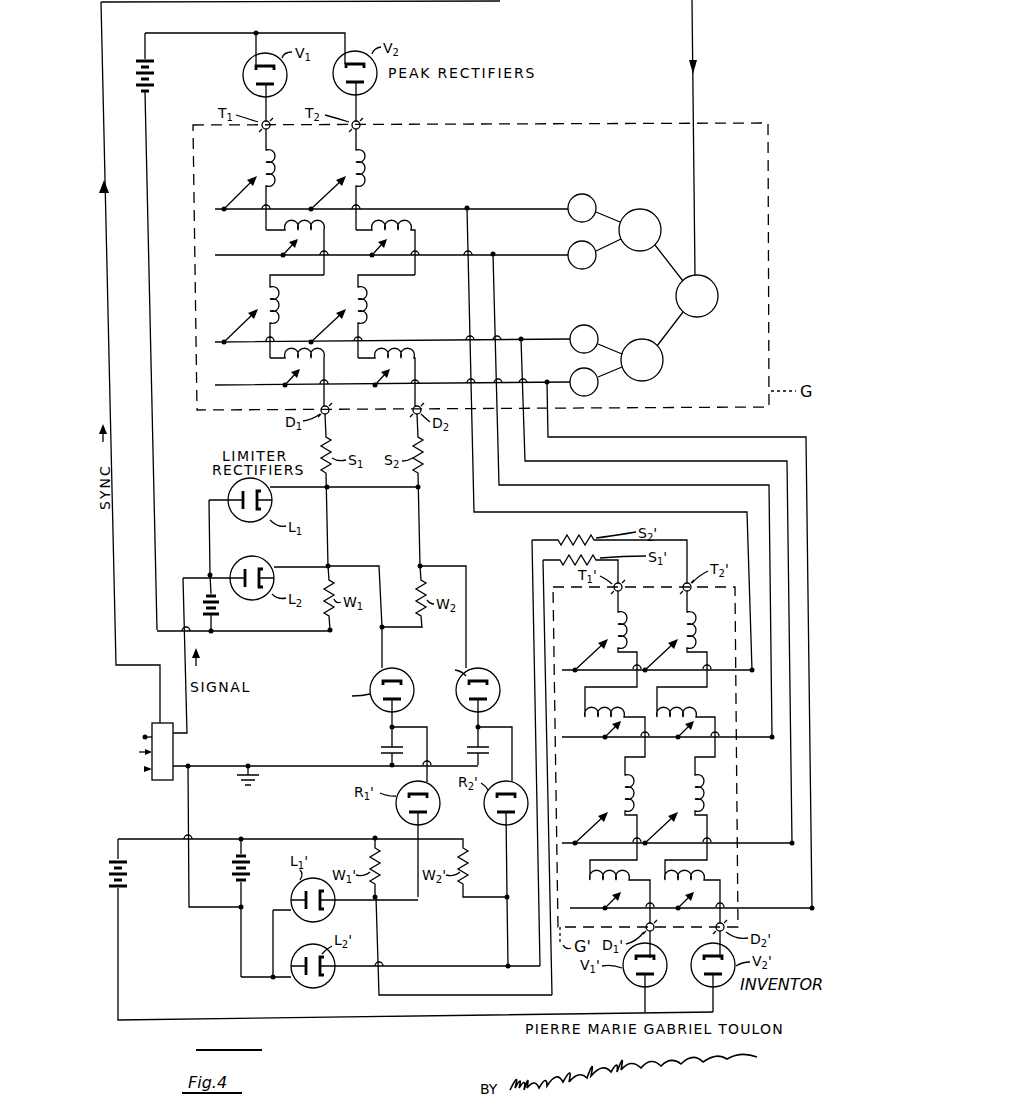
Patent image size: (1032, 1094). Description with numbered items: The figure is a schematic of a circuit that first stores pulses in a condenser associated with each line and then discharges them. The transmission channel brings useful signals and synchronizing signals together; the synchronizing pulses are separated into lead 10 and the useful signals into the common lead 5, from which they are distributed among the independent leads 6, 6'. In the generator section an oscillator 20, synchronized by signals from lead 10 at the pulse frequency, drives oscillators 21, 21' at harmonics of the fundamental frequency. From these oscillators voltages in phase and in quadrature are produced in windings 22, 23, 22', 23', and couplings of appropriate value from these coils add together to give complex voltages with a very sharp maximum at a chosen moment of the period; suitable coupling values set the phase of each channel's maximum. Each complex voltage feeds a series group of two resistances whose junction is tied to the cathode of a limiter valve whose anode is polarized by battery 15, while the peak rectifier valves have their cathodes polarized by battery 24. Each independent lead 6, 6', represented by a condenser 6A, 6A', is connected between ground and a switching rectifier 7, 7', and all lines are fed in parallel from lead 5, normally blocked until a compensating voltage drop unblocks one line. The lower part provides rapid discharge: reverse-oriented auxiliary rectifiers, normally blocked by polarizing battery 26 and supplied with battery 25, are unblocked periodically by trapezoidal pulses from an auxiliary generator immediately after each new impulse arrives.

The synchronizing pulse lead 10 is at (111, 578).
The battery of voltage P 24 is at (142, 93).
The in-phase winding 22 is at (453, 179).
The in-phase winding 22' is at (564, 332).
The quadrature winding 23 is at (476, 313).
The quadrature winding 23' is at (603, 387).
The harmonic oscillator 21 is at (639, 219).
The harmonic oscillator 21' is at (654, 346).
The synchronized oscillator 20 is at (716, 288).
The battery of voltage B 15 is at (227, 612).
The common lead 5 is at (175, 753).
The switching rectifier 7 is at (373, 692).
The switching rectifier 7' is at (473, 687).
The independent lead 6 is at (386, 752).
The condenser 6A is at (372, 746).
The independent lead 6' is at (499, 743).
The condenser 6A' is at (461, 746).
The battery of voltage P 25 is at (134, 886).
The polarizing battery B' 26 is at (232, 870).